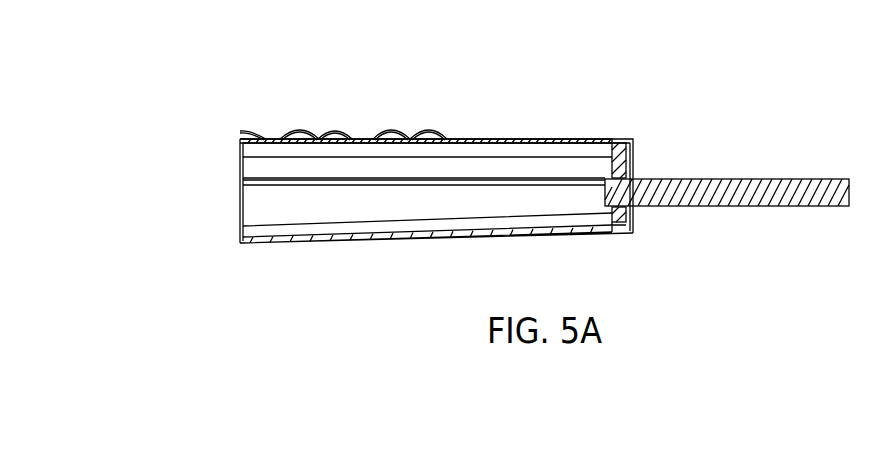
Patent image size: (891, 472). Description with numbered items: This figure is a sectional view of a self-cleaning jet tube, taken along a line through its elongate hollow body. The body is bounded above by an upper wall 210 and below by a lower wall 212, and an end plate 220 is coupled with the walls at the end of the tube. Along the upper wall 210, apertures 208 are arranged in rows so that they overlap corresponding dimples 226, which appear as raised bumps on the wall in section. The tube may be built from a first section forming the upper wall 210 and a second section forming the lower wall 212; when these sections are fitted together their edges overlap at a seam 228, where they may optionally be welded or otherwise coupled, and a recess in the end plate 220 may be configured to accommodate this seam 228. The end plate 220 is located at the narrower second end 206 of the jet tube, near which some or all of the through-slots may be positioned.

The narrower second end 206 is at (544, 189).
The apertures 208 is at (412, 129).
The upper wall 210 is at (574, 139).
The lower wall 212 is at (296, 243).
The end plate 220 is at (645, 189).
The dimples 226 is at (432, 138).
The seam 228 is at (516, 185).